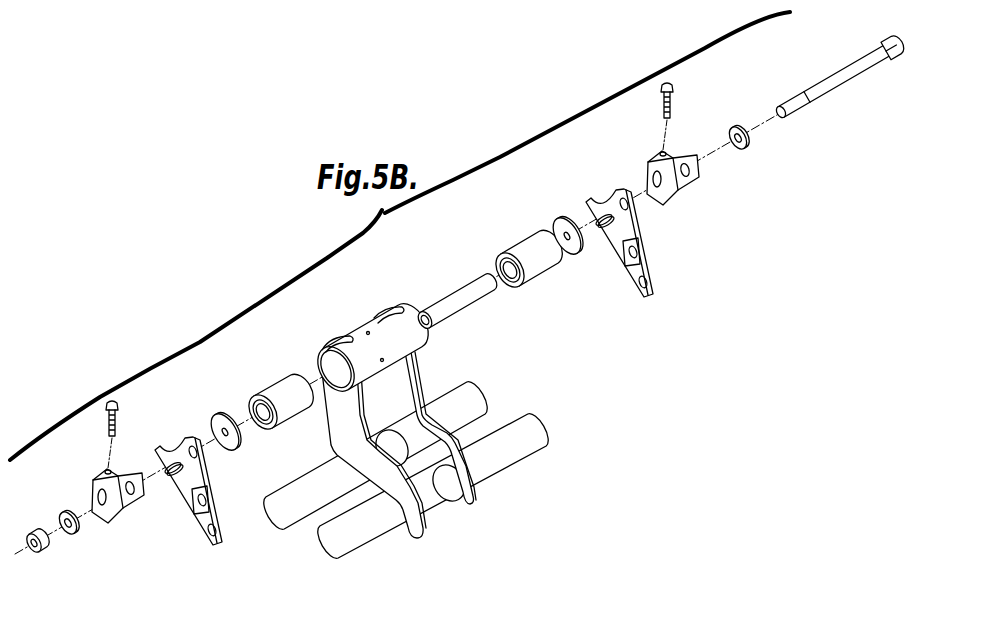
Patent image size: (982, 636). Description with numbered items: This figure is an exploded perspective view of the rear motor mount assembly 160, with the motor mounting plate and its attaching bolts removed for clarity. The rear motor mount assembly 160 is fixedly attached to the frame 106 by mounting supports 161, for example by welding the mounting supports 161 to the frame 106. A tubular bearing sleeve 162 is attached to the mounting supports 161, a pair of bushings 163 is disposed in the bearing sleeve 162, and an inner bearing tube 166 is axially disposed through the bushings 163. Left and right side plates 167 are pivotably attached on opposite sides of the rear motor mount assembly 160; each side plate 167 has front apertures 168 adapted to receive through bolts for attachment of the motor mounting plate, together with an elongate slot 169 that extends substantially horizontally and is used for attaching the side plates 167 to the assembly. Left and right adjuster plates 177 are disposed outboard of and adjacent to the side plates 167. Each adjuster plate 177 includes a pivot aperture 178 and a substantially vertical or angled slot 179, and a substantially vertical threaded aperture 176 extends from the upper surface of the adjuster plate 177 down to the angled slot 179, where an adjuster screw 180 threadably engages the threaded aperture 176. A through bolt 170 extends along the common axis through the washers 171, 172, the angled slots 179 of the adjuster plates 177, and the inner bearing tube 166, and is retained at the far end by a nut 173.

The frame 106 is at (513, 457).
The rear motor mount assembly 160 is at (694, 386).
The mounting supports 161 is at (330, 425).
The tubular bearing sleeve 162 is at (360, 337).
The bushings 163 is at (270, 383).
The inner bearing tube 166 is at (452, 288).
The side plates 167 is at (228, 533).
The front apertures 168 is at (198, 455).
The slot 169 is at (163, 460).
The through bolt 170 is at (843, 75).
The washer 171 is at (66, 518).
The washer 172 is at (213, 418).
The nut 173 is at (46, 547).
The threaded aperture 176 is at (108, 469).
The adjuster plates 177 is at (116, 467).
The pivot aperture 178 is at (134, 493).
The angled slot 179 is at (100, 494).
The adjuster screw 180 is at (114, 402).